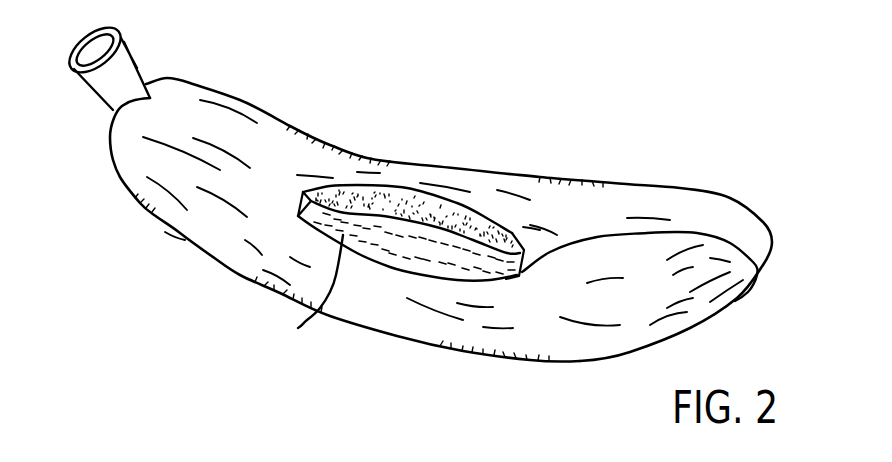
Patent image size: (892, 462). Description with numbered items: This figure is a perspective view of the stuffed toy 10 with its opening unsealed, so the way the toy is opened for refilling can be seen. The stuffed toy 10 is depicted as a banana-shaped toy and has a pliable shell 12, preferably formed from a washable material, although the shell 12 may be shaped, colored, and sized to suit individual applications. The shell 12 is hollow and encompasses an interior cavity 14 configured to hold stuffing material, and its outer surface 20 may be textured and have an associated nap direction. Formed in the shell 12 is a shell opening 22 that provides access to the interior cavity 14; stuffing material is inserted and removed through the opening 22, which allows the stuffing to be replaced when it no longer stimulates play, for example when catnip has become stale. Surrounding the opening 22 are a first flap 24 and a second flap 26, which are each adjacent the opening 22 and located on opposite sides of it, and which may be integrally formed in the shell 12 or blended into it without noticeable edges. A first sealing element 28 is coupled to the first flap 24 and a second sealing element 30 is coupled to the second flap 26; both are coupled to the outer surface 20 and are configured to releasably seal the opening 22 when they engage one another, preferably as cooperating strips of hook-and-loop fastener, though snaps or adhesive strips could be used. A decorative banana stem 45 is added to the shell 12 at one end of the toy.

The stuffed toy 10 is at (567, 433).
The pliable shell 12 is at (147, 191).
The interior cavity 14 is at (411, 236).
The outer surface 20 is at (217, 248).
The shell opening 22 is at (356, 212).
The first flap 24 is at (303, 325).
The second flap 26 is at (493, 231).
The first sealing element 28 is at (482, 262).
The second sealing element 30 is at (432, 217).
The banana stem 45 is at (109, 92).